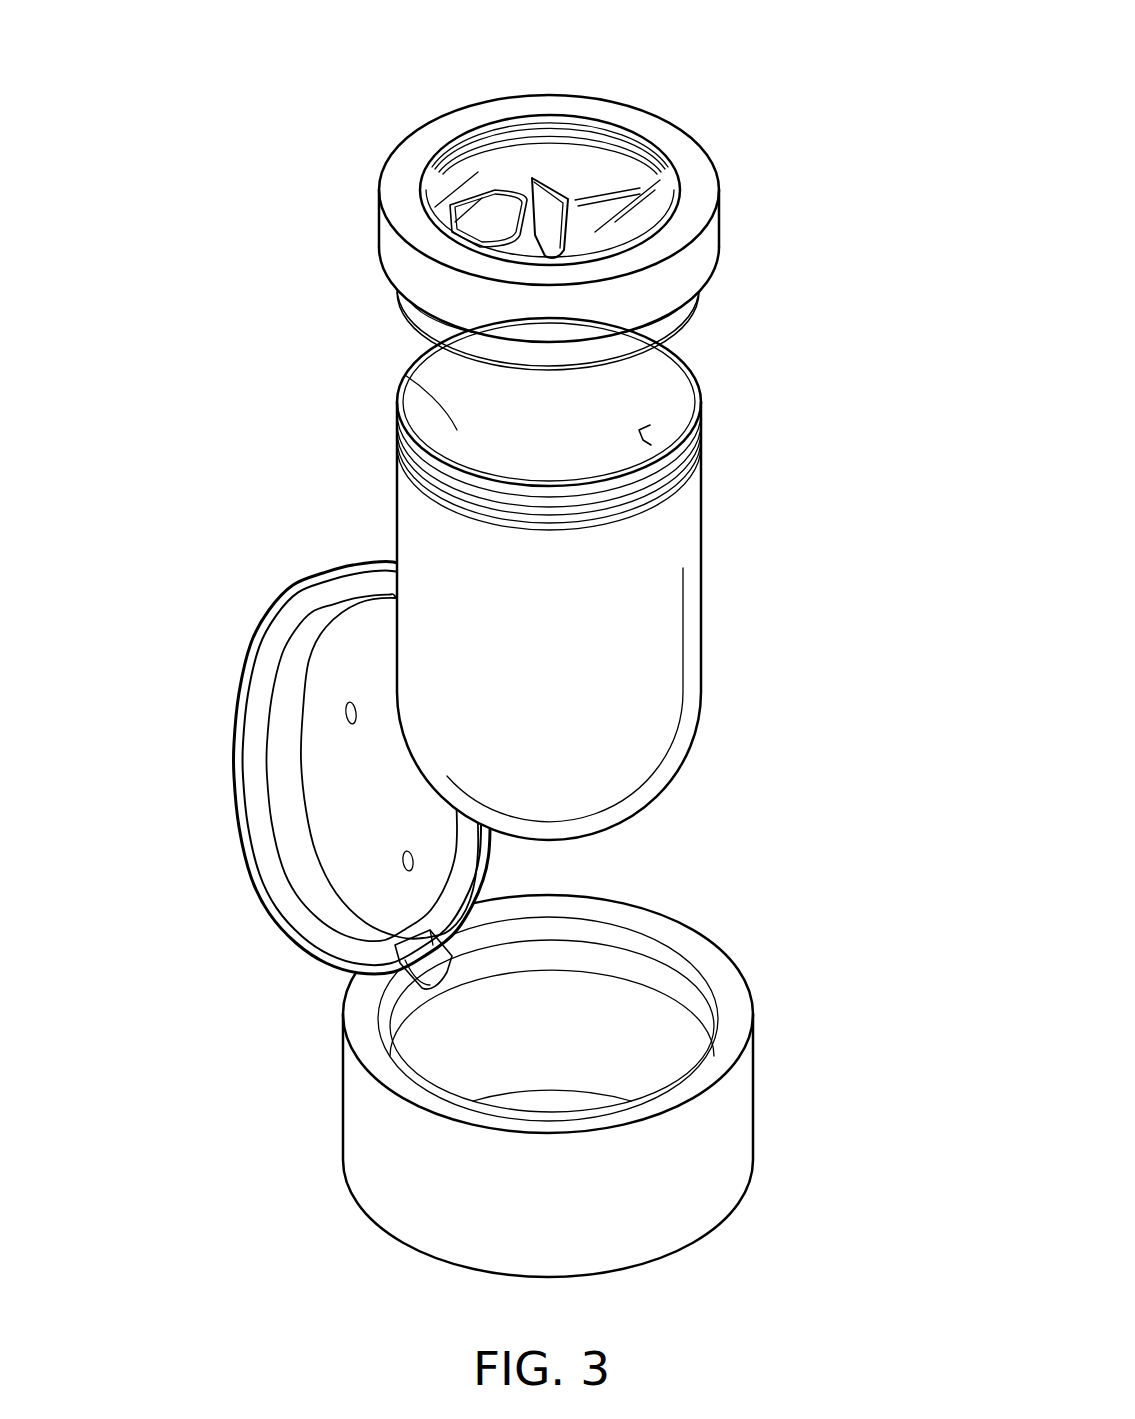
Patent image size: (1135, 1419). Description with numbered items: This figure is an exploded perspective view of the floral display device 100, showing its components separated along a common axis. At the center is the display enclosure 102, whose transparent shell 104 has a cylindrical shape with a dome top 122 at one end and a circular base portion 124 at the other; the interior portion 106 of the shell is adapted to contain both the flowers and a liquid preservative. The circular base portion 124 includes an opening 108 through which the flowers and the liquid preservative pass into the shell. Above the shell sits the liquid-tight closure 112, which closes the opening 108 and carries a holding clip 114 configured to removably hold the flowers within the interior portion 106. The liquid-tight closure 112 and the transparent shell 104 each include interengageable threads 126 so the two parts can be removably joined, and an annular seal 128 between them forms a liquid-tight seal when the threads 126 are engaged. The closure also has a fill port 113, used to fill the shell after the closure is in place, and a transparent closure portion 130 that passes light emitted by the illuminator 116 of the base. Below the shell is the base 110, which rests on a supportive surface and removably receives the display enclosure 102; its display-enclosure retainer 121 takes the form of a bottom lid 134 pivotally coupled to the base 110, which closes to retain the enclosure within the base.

The floral display device 100 is at (236, 110).
The display enclosure 102 is at (563, 579).
The transparent shell 104 is at (702, 548).
The interior portion 106 is at (405, 375).
The opening 108 is at (650, 425).
The base 110 is at (738, 1140).
The liquid-tight closure 112 is at (563, 219).
The fill port 113 is at (498, 210).
The holding clip 114 is at (570, 200).
The illuminator 116 is at (351, 706).
The display-enclosure retainer 121 is at (375, 767).
The dome top 122 is at (672, 786).
The circular base portion 124 is at (702, 430).
The threads 126 is at (510, 126).
The annular seal 128 is at (697, 312).
The transparent closure portion 130 is at (498, 178).
The bottom lid 134 is at (293, 590).